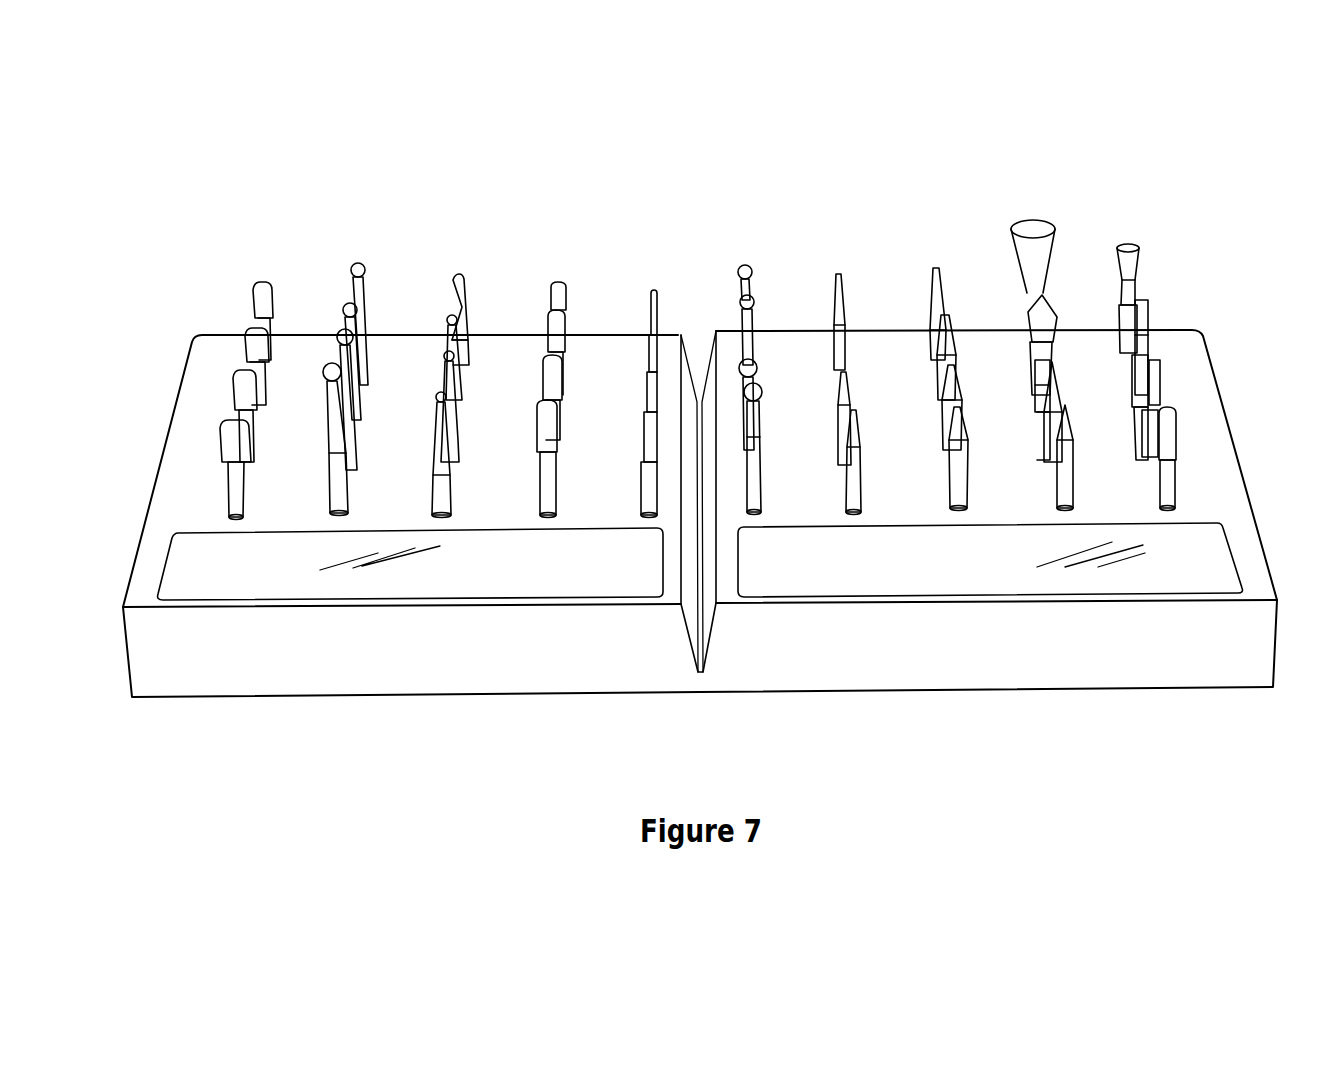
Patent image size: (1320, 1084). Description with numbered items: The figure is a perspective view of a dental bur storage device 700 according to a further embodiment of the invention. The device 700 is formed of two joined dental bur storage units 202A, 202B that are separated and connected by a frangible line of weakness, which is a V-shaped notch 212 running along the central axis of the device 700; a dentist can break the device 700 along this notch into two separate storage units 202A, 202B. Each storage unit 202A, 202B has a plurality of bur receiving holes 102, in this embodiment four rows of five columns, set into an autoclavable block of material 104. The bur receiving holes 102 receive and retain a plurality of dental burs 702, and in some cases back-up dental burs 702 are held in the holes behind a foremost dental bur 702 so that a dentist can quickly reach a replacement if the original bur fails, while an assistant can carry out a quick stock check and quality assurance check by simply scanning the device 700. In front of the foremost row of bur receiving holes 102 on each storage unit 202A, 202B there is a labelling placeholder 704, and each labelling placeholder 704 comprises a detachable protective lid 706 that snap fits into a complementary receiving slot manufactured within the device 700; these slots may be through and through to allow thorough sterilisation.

The dental bur storage device 700 is at (700, 483).
The dental bur 702 is at (462, 308).
The bur receiving hole 102 is at (710, 476).
The autoclavable block of material 104 is at (302, 362).
The V-shaped notch 212 is at (696, 352).
The labelling placeholder 704 is at (268, 573).
The detachable protective lid 706 is at (641, 598).
The dental bur storage unit 202A is at (352, 748).
The dental bur storage unit 202B is at (1056, 732).